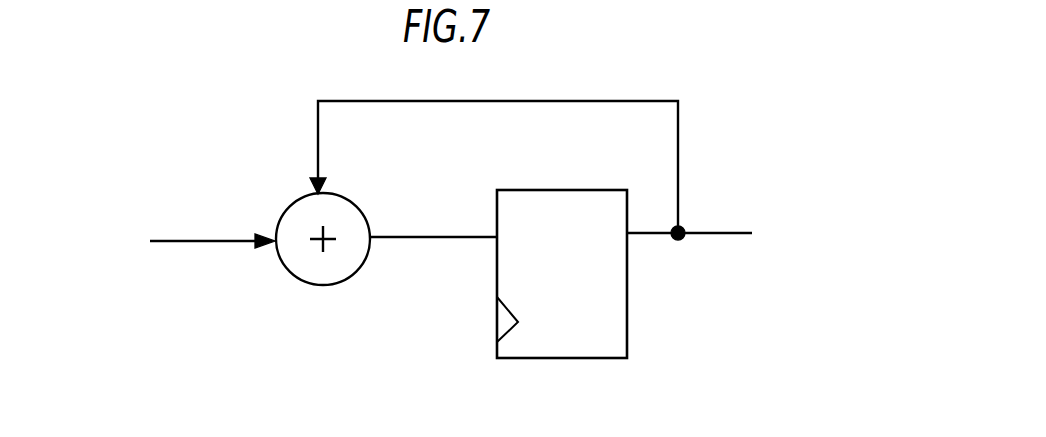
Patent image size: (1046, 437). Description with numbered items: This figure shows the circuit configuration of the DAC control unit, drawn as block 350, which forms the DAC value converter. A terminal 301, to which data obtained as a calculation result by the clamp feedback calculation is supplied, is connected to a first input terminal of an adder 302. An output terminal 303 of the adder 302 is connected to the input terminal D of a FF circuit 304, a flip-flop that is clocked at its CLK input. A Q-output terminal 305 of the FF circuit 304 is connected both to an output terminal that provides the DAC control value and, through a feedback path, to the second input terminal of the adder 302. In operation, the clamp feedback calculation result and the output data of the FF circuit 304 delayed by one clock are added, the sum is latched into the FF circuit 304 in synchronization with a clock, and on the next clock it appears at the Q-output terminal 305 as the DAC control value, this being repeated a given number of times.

The terminal 301 is at (200, 241).
The adder 302 is at (327, 285).
The output terminal 303 is at (430, 237).
The FF circuit 304 is at (560, 190).
The Q-output terminal 305 is at (710, 233).
The integration circuit 350 is at (748, 76).